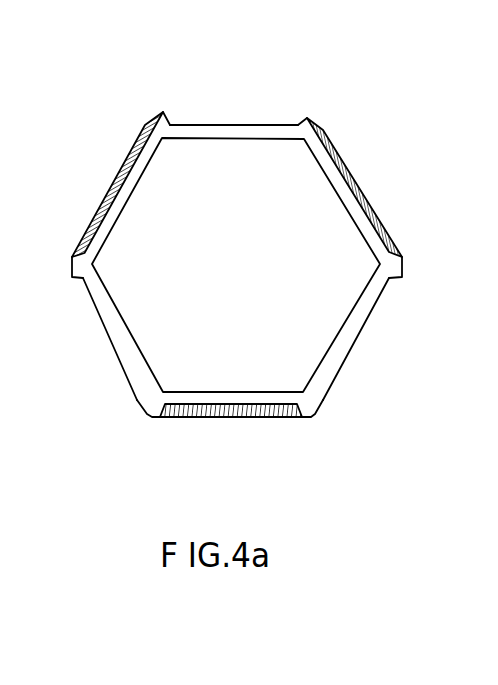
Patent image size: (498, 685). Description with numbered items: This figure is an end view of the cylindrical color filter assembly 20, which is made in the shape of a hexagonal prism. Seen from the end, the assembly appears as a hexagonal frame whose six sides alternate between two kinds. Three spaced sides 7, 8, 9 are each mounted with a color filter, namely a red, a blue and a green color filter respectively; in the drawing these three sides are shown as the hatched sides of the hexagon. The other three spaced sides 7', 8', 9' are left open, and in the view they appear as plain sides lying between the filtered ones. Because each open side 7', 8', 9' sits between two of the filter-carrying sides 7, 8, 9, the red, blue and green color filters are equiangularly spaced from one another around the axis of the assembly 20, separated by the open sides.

The cylindrical color filter assembly 20 is at (193, 117).
The spaced side 7 is at (109, 184).
The open side 7' is at (362, 339).
The spaced side 8 is at (363, 187).
The open side 8' is at (95, 339).
The spaced side 9 is at (231, 437).
The open side 9' is at (234, 92).